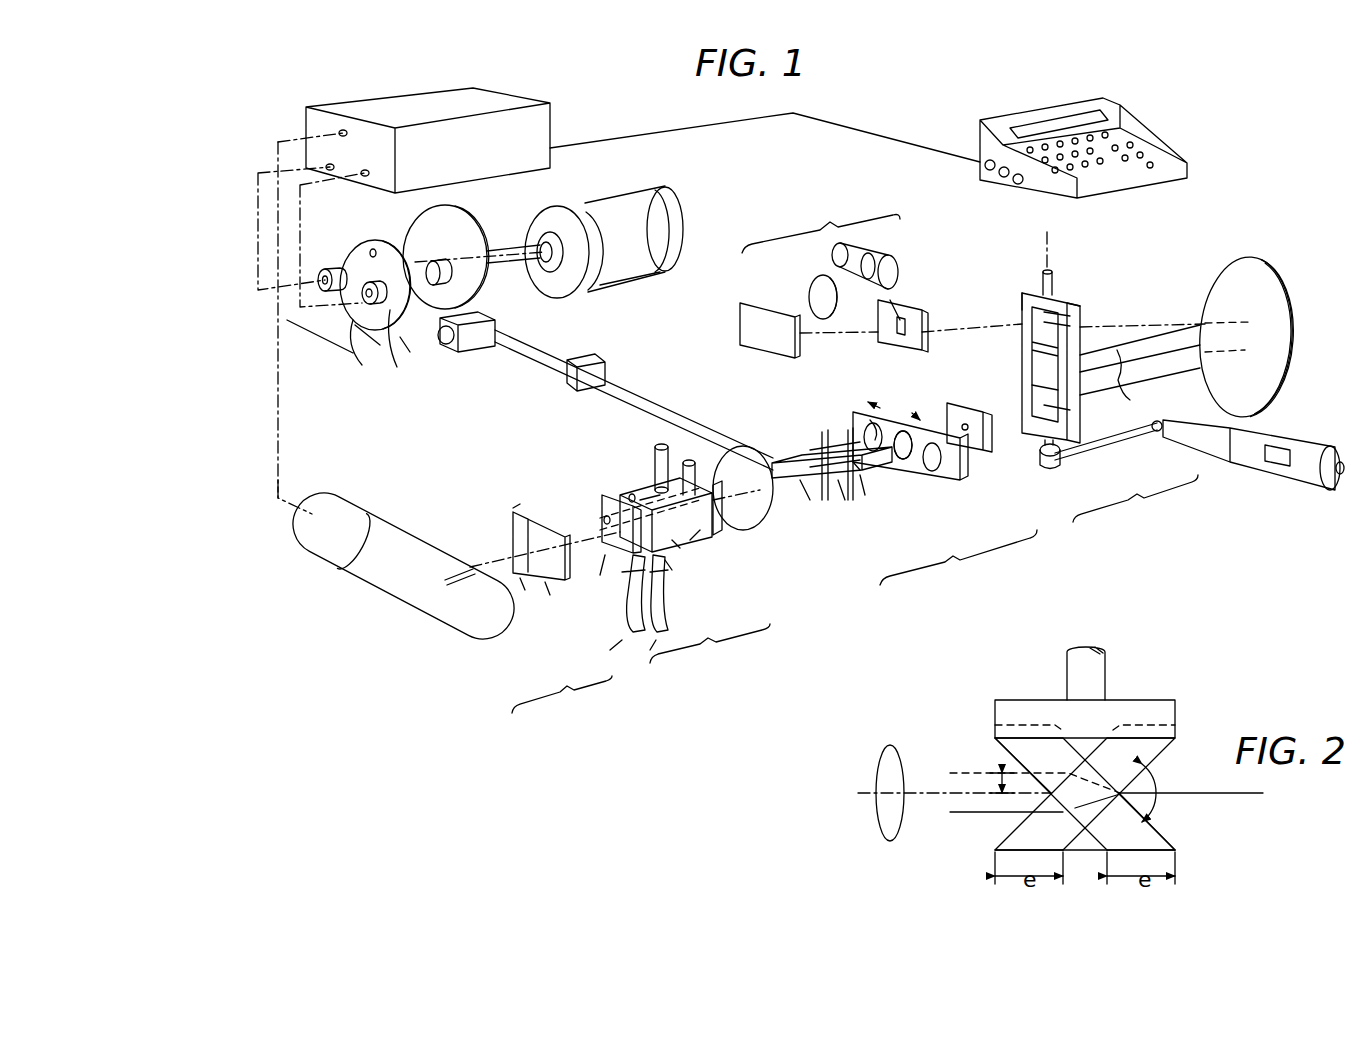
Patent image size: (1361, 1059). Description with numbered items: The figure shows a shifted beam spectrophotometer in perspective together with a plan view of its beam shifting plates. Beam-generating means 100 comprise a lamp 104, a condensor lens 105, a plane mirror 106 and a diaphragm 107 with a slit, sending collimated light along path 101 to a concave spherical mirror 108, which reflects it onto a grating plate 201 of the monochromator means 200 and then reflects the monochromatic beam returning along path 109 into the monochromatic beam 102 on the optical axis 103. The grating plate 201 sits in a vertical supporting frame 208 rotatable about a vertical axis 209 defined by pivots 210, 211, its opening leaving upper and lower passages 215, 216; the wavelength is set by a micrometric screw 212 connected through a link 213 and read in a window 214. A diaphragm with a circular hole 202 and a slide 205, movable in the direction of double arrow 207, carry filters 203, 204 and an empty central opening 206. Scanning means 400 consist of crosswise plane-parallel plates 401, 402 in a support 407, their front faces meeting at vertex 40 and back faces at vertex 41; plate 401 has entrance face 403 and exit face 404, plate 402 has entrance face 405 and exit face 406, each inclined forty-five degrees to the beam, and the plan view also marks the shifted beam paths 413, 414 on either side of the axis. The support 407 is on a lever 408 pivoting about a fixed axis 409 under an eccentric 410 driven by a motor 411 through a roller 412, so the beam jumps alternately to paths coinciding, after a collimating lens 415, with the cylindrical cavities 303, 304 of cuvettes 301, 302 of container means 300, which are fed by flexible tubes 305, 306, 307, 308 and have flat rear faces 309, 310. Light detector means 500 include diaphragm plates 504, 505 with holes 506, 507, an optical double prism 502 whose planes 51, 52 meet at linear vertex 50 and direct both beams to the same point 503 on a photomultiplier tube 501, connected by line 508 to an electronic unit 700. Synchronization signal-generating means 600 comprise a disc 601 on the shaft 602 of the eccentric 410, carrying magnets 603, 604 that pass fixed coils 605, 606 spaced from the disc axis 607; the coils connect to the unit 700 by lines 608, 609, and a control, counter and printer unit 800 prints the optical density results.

In FIG. 1, the electronic unit 700 is at (487, 75).
In FIG. 1, the line 608 is at (258, 187).
In FIG. 1, the line 609 is at (300, 208).
In FIG. 1, the synchronization signal-generating means 600 is at (345, 355).
In FIG. 1, the disc 601 is at (393, 340).
In FIG. 1, the shaft 602 is at (460, 256).
In FIG. 1, the permanent magnet 603 is at (347, 267).
In FIG. 1, the permanent magnet 604 is at (375, 250).
In FIG. 1, the fixed coil 605 is at (322, 290).
In FIG. 1, the fixed coil 606 is at (400, 352).
In FIG. 1, the axis of the disc 607 is at (366, 305).
In FIG. 1, the eccentric 410 is at (470, 230).
In FIG. 1, the motor 411 is at (668, 222).
In FIG. 1, the roller 412 is at (462, 352).
In FIG. 1, the lever 408 is at (650, 400).
In FIG. 2, the lever 408 is at (1097, 682).
In FIG. 1, the horizontal fixed axis 409 is at (557, 373).
In FIG. 1, the line 508 is at (280, 482).
In FIG. 1, the light detector means 500 is at (562, 709).
In FIG. 1, the photomultiplier tube 501 is at (415, 615).
In FIG. 1, the optical double prism 502 is at (518, 490).
In FIG. 1, the point on the photocathode 503 is at (443, 578).
In FIG. 1, the diaphragm plate 504 is at (725, 535).
In FIG. 1, the diaphragm plate 505 is at (610, 560).
In FIG. 1, the hole 506 is at (604, 518).
In FIG. 1, the hole 507 is at (606, 580).
In FIG. 1, the linear vertex 50 is at (522, 585).
In FIG. 1, the plane 51 is at (512, 550).
In FIG. 1, the plane 52 is at (552, 600).
In FIG. 1, the container means 300 is at (710, 658).
In FIG. 1, the cuvette 301 is at (618, 480).
In FIG. 1, the cuvette 302 is at (675, 545).
In FIG. 1, the cylindrical cavity 303 is at (645, 495).
In FIG. 1, the cylindrical cavity 304 is at (693, 538).
In FIG. 1, the flexible tube 305 is at (628, 625).
In FIG. 1, the flexible tube 306 is at (655, 460).
In FIG. 1, the flexible tube 307 is at (660, 615).
In FIG. 1, the flexible tube 308 is at (700, 455).
In FIG. 1, the rear face 309 is at (628, 497).
In FIG. 1, the rear face 310 is at (668, 565).
In FIG. 1, the scanning means 400 is at (958, 566).
In FIG. 1, the plane-parallel member 401 is at (800, 450).
In FIG. 2, the plane-parallel member 401 is at (1150, 842).
In FIG. 1, the plane-parallel member 402 is at (802, 495).
In FIG. 2, the plane-parallel member 402 is at (1015, 838).
In FIG. 2, the entrance face 403 is at (1158, 830).
In FIG. 1, the exit face 404 is at (865, 500).
In FIG. 2, the exit face 404 is at (1098, 852).
In FIG. 1, the entrance face 405 is at (842, 505).
In FIG. 2, the entrance face 405 is at (1080, 852).
In FIG. 2, the exit face 406 is at (1020, 817).
In FIG. 1, the support 407 is at (810, 455).
In FIG. 2, the support 407 is at (1160, 714).
In FIG. 2, the beam 413 is at (978, 773).
In FIG. 2, the beam 414 is at (950, 812).
In FIG. 1, the lens 415 is at (765, 530).
In FIG. 2, the lens 415 is at (893, 752).
In FIG. 1, the vertex 40 is at (846, 445).
In FIG. 2, the vertex 40 is at (1122, 790).
In FIG. 1, the vertex 41 is at (826, 498).
In FIG. 2, the vertex 41 is at (1056, 790).
In FIG. 1, the optical axis 103 is at (775, 510).
In FIG. 2, the optical axis 103 is at (926, 790).
In FIG. 1, the beam-generating means 100 is at (821, 224).
In FIG. 1, the path 101 is at (952, 332).
In FIG. 1, the monochromatic beam 102 is at (1010, 440).
In FIG. 2, the monochromatic beam 102 is at (1255, 793).
In FIG. 1, the lamp 104 is at (897, 265).
In FIG. 1, the condensor lens 105 is at (815, 285).
In FIG. 1, the plane mirror 106 is at (740, 335).
In FIG. 1, the diaphragm 107 is at (912, 305).
In FIG. 1, the monochromator means 200 is at (1135, 506).
In FIG. 1, the grating plate 201 is at (1022, 355).
In FIG. 1, the circular hole 202 is at (1000, 400).
In FIG. 1, the optical filter 203 is at (870, 420).
In FIG. 1, the optical filter 204 is at (934, 472).
In FIG. 1, the slide 205 is at (962, 482).
In FIG. 1, the central opening 206 is at (903, 460).
In FIG. 1, the double arrow 207 is at (912, 413).
In FIG. 1, the supporting frame 208 is at (1075, 322).
In FIG. 1, the vertical axis 209 is at (1047, 232).
In FIG. 1, the pivot 210 is at (1055, 282).
In FIG. 1, the pivot 211 is at (1040, 468).
In FIG. 1, the micrometric screw 212 is at (1222, 465).
In FIG. 1, the link 213 is at (1112, 445).
In FIG. 1, the window 214 is at (1283, 470).
In FIG. 1, the upper passage 215 is at (1022, 296).
In FIG. 1, the lower passage 216 is at (1040, 395).
In FIG. 1, the concave spherical mirror 108 is at (1207, 290).
In FIG. 1, the path 109 is at (1110, 395).
In FIG. 1, the control, counter and printer unit 800 is at (1173, 188).